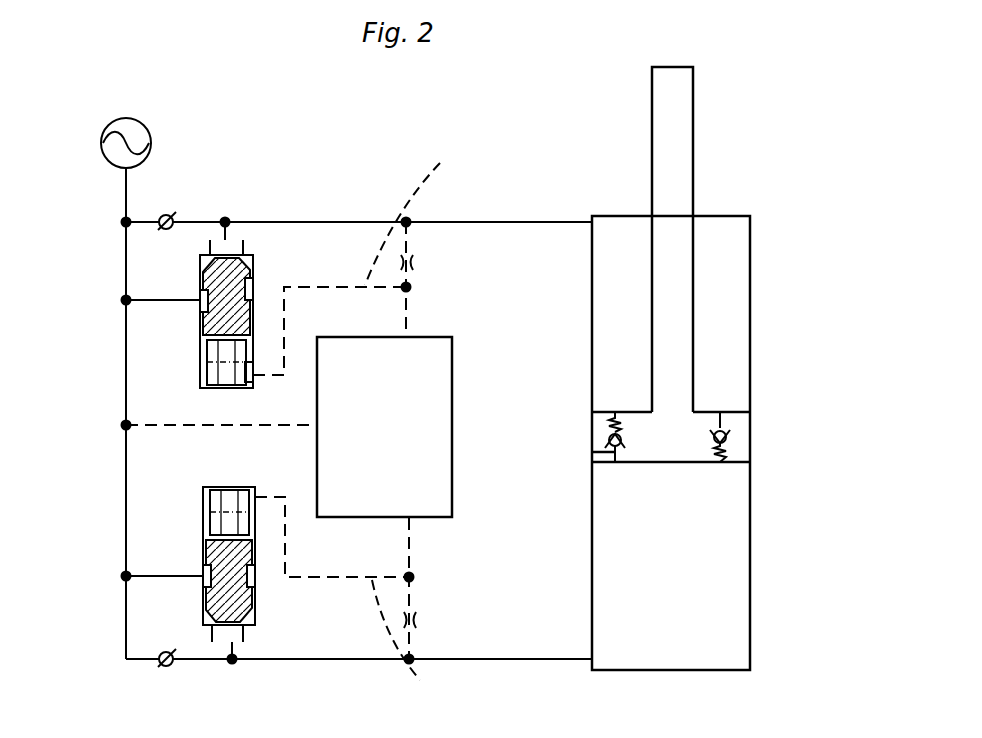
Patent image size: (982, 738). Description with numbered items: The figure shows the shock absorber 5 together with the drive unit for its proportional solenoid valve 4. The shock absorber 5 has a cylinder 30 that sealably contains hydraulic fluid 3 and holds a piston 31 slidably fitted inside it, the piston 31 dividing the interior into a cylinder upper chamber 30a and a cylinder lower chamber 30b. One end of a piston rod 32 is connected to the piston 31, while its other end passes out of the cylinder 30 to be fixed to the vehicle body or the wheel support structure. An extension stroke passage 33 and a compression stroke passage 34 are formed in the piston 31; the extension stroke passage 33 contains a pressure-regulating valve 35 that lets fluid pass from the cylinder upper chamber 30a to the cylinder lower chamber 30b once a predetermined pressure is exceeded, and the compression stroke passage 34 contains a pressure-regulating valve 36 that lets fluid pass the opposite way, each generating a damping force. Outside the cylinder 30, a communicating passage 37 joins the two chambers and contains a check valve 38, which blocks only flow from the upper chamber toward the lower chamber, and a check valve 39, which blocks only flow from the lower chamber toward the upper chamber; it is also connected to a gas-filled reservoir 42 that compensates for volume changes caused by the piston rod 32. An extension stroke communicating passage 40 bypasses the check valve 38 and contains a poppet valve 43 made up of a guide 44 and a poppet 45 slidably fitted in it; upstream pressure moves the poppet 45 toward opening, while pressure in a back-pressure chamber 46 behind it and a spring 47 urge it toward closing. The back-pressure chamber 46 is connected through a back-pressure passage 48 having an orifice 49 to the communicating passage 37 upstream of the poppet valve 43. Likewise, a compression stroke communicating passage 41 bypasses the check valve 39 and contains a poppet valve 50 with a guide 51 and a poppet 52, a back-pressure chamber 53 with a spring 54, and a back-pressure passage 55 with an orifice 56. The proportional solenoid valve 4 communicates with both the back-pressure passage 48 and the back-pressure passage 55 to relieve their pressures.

The hydraulic fluid 3 is at (703, 519).
The proportional solenoid valve 4 is at (455, 352).
The shock absorber 5 is at (806, 172).
The cylinder 30 is at (721, 443).
The cylinder upper chamber 30a is at (740, 322).
The cylinder lower chamber 30b is at (736, 580).
The piston 31 is at (771, 433).
The piston rod 32 is at (680, 134).
The extension stroke passage 33 is at (752, 413).
The compression stroke passage 34 is at (592, 452).
The pressure-regulating valve 35 is at (742, 455).
The pressure-regulating valve 36 is at (569, 439).
The communicating passage 37 is at (458, 222).
The check valve 38 is at (168, 214).
The check valve 39 is at (168, 667).
The extension stroke communicating passage 40 is at (124, 301).
The compression stroke communicating passage 41 is at (165, 576).
The reservoir 42 is at (140, 124).
The poppet valve 43 is at (180, 273).
The guide 44 is at (242, 287).
The poppet 45 is at (206, 274).
The back-pressure chamber 46 is at (206, 364).
The spring 47 is at (208, 392).
The back-pressure passage 48 is at (415, 210).
The orifice 49 is at (410, 262).
The poppet valve 50 is at (308, 571).
The guide 51 is at (206, 582).
The poppet 52 is at (240, 602).
The back-pressure chamber 53 is at (224, 487).
The spring 54 is at (232, 487).
The back-pressure passage 55 is at (414, 643).
The orifice 56 is at (418, 622).